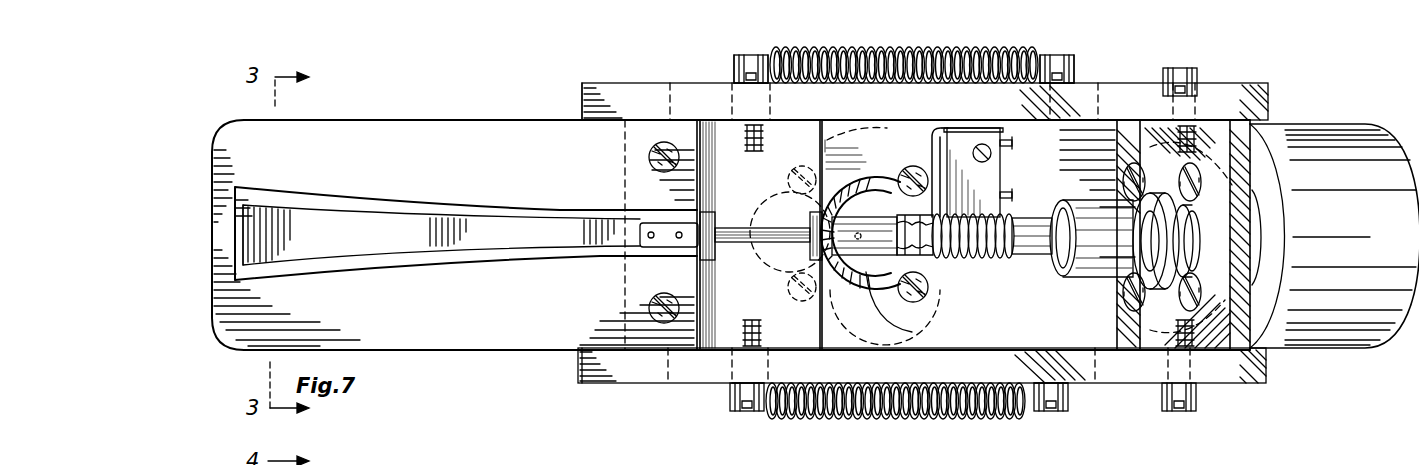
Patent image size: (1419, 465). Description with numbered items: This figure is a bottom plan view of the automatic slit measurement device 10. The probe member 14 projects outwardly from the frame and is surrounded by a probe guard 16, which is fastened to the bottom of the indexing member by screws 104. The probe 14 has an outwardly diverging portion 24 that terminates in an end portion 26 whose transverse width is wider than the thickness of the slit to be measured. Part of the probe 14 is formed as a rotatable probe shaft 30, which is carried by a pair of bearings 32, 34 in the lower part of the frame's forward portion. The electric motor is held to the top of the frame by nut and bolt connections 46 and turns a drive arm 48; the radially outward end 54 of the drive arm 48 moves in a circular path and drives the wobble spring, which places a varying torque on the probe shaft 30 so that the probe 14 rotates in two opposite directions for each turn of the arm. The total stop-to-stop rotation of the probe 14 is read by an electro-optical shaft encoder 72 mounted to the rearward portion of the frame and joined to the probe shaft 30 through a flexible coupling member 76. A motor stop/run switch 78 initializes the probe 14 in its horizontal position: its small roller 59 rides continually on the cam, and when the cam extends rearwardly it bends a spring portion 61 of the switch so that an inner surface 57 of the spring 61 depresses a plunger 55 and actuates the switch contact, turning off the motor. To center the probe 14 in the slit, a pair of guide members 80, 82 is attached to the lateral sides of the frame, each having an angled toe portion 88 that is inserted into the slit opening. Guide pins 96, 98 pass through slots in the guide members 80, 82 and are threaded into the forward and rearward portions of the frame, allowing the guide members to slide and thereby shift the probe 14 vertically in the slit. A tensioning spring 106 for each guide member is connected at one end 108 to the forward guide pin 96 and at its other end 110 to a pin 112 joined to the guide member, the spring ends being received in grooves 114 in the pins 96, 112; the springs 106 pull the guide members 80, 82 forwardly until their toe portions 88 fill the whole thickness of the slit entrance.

The automatic slit measurement device 10 is at (1298, 115).
The probe member 14 is at (416, 205).
The probe guard 16 is at (470, 330).
The outwardly diverging portion 24 is at (322, 225).
The end portion 26 is at (233, 222).
The rotatable probe shaft 30 is at (758, 244).
The bearing 32 is at (713, 262).
The bearing 34 is at (800, 262).
The nut and bolt connections 46 is at (930, 302).
The drive arm 48 is at (862, 325).
The radially outward end 54 is at (765, 225).
The plunger 55 is at (952, 128).
The inner surface 57 is at (920, 152).
The roller 59 is at (872, 180).
The spring portion 61 is at (968, 200).
The electro-optical shaft encoder 72 is at (1358, 330).
The flexible coupling member 76 is at (975, 262).
The motor stop/run switch 78 is at (975, 172).
The guide member 80 is at (860, 420).
The guide member 82 is at (676, 82).
The angled toe portion 88 is at (606, 385).
The forward guide pin 96 is at (742, 414).
The rearward guide pin 98 is at (1200, 400).
The screws 104 is at (648, 304).
The tensioning spring 106 is at (850, 84).
The spring end 108 is at (738, 405).
The spring end 110 is at (1072, 408).
The pin 112 is at (1062, 412).
The grooves 114 is at (1048, 414).